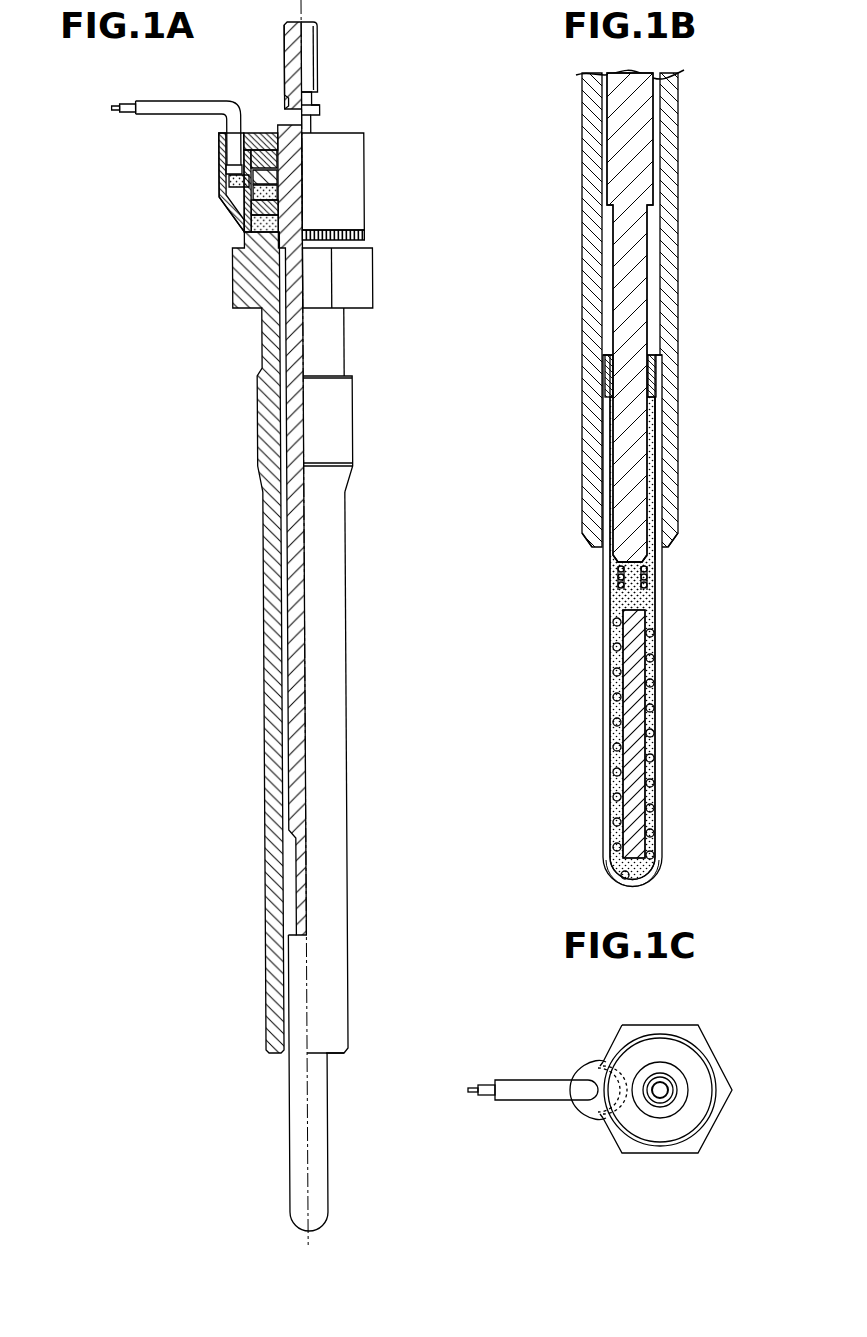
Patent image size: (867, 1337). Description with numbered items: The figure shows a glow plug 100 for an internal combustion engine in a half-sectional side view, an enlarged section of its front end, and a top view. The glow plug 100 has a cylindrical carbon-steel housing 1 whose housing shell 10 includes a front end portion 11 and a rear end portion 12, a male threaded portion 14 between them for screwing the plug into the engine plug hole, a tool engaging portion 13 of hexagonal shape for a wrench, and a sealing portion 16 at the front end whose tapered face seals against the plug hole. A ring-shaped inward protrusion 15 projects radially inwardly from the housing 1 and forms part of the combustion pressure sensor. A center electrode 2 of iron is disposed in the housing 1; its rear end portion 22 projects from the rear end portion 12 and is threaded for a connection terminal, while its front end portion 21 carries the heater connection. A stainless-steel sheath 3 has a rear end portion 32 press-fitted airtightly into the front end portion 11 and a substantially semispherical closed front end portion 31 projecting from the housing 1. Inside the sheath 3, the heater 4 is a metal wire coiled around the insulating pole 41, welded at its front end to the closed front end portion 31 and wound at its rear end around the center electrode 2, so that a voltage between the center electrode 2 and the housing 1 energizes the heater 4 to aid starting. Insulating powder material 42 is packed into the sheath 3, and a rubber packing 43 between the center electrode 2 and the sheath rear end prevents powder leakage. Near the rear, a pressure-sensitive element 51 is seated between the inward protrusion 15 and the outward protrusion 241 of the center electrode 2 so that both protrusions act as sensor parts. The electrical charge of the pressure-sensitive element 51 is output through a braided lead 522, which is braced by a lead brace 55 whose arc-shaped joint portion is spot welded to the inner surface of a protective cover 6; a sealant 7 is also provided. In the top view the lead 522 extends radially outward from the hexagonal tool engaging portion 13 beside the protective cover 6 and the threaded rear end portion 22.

In FIG. 1A, the glow plug 100 is at (380, 74).
In FIG. 1A, the housing 1 is at (270, 512).
In FIG. 1B, the housing 1 is at (592, 330).
In FIG. 1A, the center electrode 2 is at (288, 682).
In FIG. 1B, the center electrode 2 is at (642, 158).
In FIG. 1A, the sheath 3 is at (292, 1182).
In FIG. 1B, the sheath 3 is at (660, 836).
In FIG. 1B, the heater 4 is at (661, 750).
In FIG. 1A, the protective cover 6 is at (364, 188).
In FIG. 1C, the protective cover 6 is at (713, 1060).
In FIG. 1C, the sealant 7 is at (698, 1123).
In FIG. 1A, the housing shell 10 is at (344, 790).
In FIG. 1A, the front end portion 11 is at (314, 947).
In FIG. 1B, the front end portion 11 is at (588, 522).
In FIG. 1A, the rear end portion 12 is at (228, 205).
In FIG. 1A, the tool engaging portion 13 is at (352, 270).
In FIG. 1C, the tool engaging portion 13 is at (698, 1028).
In FIG. 1A, the male threaded portion 14 is at (328, 420).
In FIG. 1A, the inward protrusion 15 is at (262, 133).
In FIG. 1A, the sealing portion 16 is at (343, 1056).
In FIG. 1B, the front end portion 21 is at (638, 533).
In FIG. 1A, the rear end portion 22 is at (318, 78).
In FIG. 1C, the rear end portion 22 is at (658, 1102).
In FIG. 1B, the closed front end portion 31 is at (661, 871).
In FIG. 1B, the rear end portion 32 is at (660, 446).
In FIG. 1B, the insulating pole 41 is at (626, 690).
In FIG. 1B, the insulating powder material 42 is at (640, 604).
In FIG. 1B, the rubber packing 43 is at (654, 383).
In FIG. 1A, the pressure-sensitive element 51 is at (244, 165).
In FIG. 1C, the lead brace 55 is at (592, 1066).
In FIG. 1A, the outward protrusion 241 is at (244, 226).
In FIG. 1A, the lead 522 is at (181, 102).
In FIG. 1C, the lead 522 is at (540, 1098).